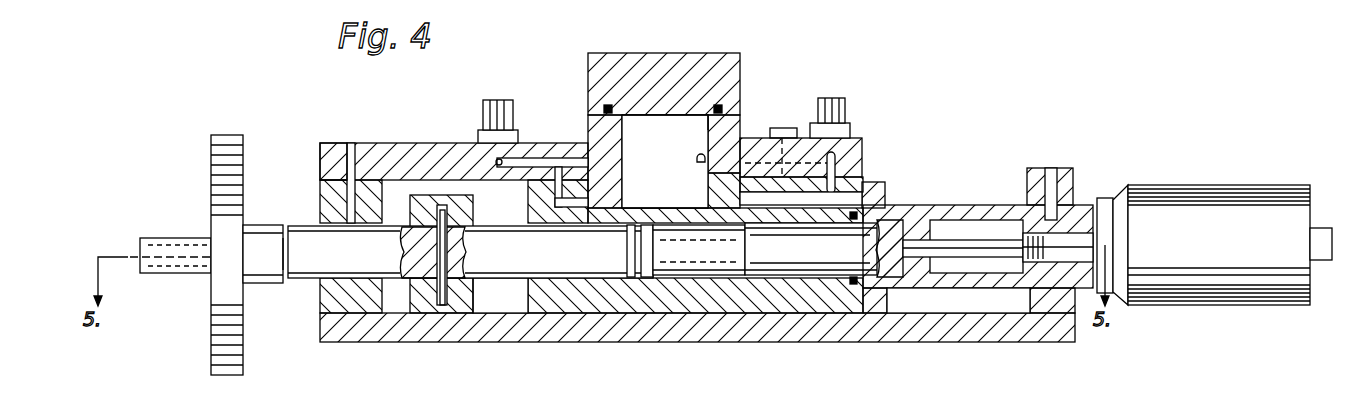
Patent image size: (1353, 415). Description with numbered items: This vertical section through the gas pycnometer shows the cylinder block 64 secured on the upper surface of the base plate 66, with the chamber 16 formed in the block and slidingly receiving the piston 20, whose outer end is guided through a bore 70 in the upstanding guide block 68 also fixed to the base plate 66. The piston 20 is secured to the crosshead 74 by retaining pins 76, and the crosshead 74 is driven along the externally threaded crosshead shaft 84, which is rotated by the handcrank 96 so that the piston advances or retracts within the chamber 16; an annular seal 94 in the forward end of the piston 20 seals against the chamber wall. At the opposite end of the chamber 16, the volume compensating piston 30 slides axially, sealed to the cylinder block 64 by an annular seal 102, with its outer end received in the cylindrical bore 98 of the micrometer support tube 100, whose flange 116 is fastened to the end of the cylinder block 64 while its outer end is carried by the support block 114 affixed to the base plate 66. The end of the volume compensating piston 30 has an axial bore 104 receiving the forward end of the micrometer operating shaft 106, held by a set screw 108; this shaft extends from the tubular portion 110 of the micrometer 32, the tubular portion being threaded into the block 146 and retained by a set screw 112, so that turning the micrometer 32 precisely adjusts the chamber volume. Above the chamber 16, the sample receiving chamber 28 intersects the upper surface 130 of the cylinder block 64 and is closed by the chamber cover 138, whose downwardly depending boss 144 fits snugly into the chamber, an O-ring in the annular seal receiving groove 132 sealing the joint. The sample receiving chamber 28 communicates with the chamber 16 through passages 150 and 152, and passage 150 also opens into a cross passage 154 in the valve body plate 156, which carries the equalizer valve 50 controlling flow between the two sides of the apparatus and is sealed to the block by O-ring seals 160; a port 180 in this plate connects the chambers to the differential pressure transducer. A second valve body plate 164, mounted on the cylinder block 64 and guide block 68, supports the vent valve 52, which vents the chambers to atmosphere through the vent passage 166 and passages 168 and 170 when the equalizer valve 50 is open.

The chamber 16 is at (700, 278).
The piston 20 is at (510, 280).
The sample receiving chamber 28 is at (628, 157).
The volume compensating piston 30 is at (815, 280).
The micrometer 32 is at (1228, 200).
The equalizer valve 50 is at (850, 108).
The vent valve 52 is at (497, 100).
The cylinder block 64 is at (590, 121).
The base plate 66 is at (402, 335).
The guide block 68 is at (320, 300).
The bore 70 is at (302, 226).
The crosshead 74 is at (465, 308).
The retaining pins 76 is at (412, 220).
The crosshead shaft 84 is at (283, 282).
The annular seal 94 is at (630, 280).
The handcrank 96 is at (211, 341).
The cylindrical bore 98 is at (972, 273).
The micrometer support tube 100 is at (912, 292).
The annular seal 102 is at (893, 212).
The axial bore 104 is at (811, 249).
The micrometer operating shaft 106 is at (980, 240).
The set screw 108 is at (930, 206).
The tubular portion 110 is at (1063, 262).
The set screw 112 is at (1050, 168).
The support block 114 is at (1070, 170).
The flange 116 is at (880, 183).
The upper surface 130 is at (740, 100).
The annular seal receiving groove 132 is at (606, 106).
The chamber cover 138 is at (700, 53).
The boss 144 is at (665, 116).
The block 146 is at (790, 128).
The passage 150 is at (782, 200).
The passage 152 is at (720, 214).
The cross passage 154 is at (862, 150).
The valve body plate 156 is at (812, 135).
The O-ring seals 160 is at (548, 180).
The second valve body plate 164 is at (372, 143).
The vent passage 166 is at (485, 201).
The passage 168 is at (497, 160).
The passage 170 is at (665, 192).
The port 180 is at (701, 164).